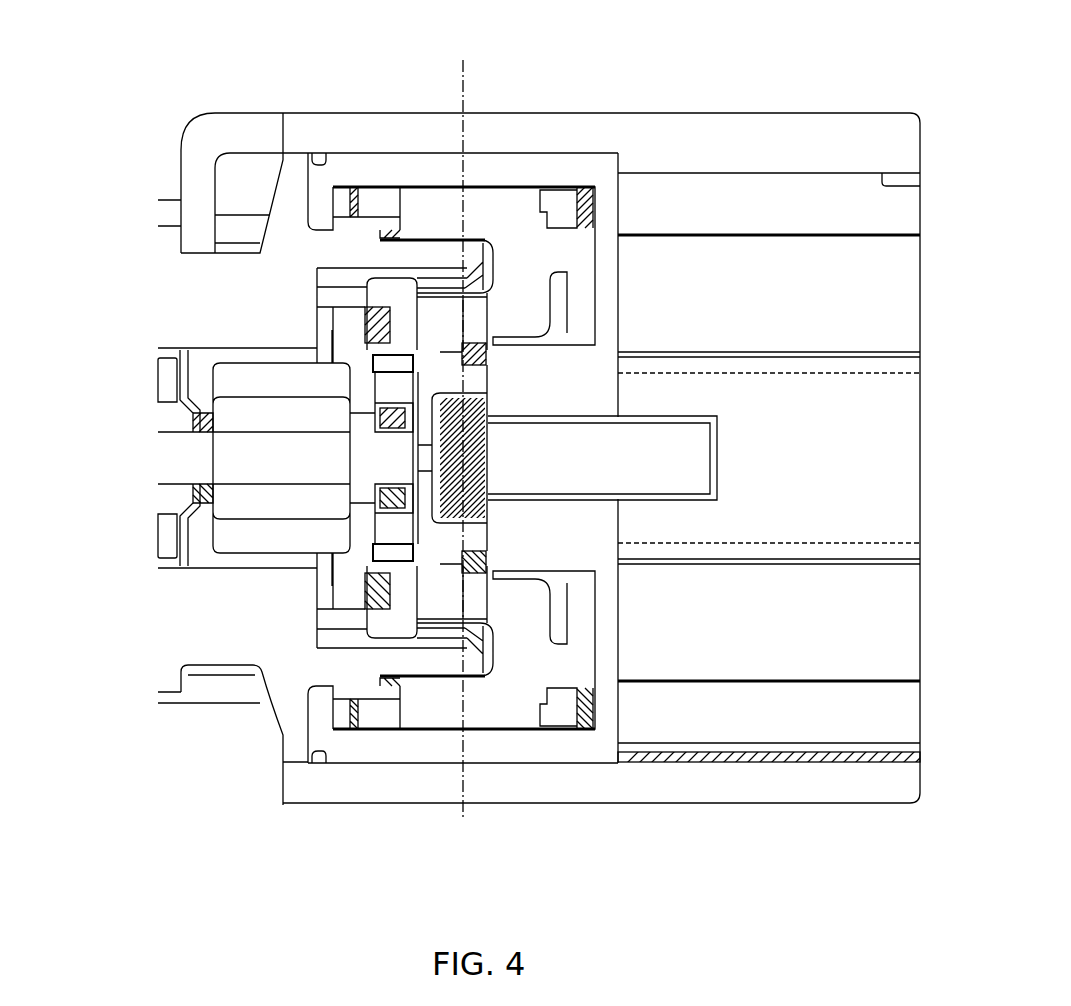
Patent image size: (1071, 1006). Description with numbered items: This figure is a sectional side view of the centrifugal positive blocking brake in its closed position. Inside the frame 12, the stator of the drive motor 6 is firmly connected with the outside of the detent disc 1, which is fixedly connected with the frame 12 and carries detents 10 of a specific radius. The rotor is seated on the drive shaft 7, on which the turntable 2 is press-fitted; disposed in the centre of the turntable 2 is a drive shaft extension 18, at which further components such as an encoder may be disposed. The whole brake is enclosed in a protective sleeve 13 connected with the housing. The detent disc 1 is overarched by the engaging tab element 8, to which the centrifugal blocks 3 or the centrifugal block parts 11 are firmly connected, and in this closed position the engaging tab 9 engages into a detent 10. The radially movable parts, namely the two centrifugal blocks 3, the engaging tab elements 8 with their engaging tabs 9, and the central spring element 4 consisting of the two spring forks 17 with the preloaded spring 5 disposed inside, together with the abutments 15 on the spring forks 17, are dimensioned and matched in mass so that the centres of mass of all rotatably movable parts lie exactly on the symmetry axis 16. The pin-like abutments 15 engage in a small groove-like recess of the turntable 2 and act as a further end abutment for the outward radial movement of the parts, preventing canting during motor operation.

The detent disc 1 is at (406, 255).
The turntable 2 is at (385, 289).
The centrifugal block 3 is at (588, 376).
The central spring element 4 is at (237, 458).
The preloaded spring 5 is at (452, 490).
The drive motor 6 is at (168, 396).
The drive shaft 7 is at (275, 463).
The engaging tab element 8 is at (480, 218).
The engaging tab 9 is at (435, 350).
The detent 10 is at (437, 242).
The centrifugal block part 11 is at (556, 202).
The frame 12 is at (293, 263).
The protective sleeve 13 is at (672, 133).
The abutment 15 is at (395, 372).
The symmetry axis 16 is at (461, 133).
The spring fork 17 is at (421, 393).
The drive shaft extension 18 is at (667, 500).